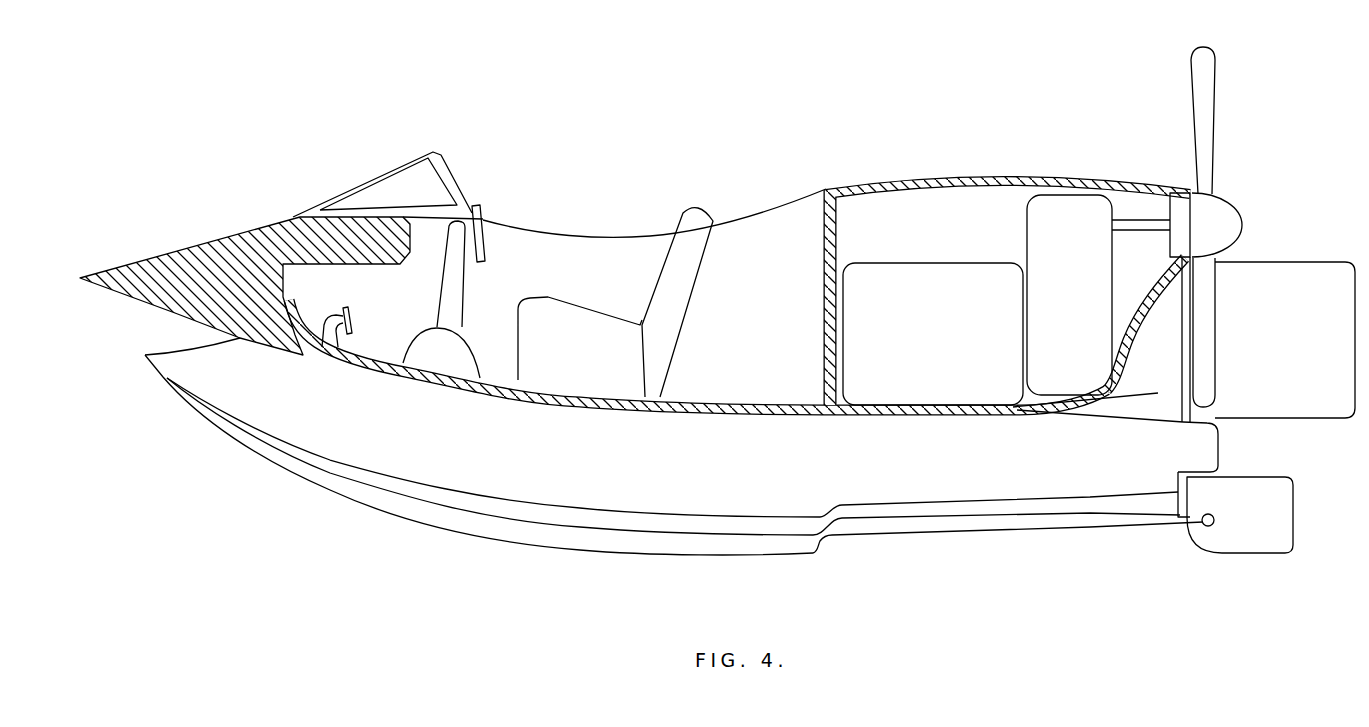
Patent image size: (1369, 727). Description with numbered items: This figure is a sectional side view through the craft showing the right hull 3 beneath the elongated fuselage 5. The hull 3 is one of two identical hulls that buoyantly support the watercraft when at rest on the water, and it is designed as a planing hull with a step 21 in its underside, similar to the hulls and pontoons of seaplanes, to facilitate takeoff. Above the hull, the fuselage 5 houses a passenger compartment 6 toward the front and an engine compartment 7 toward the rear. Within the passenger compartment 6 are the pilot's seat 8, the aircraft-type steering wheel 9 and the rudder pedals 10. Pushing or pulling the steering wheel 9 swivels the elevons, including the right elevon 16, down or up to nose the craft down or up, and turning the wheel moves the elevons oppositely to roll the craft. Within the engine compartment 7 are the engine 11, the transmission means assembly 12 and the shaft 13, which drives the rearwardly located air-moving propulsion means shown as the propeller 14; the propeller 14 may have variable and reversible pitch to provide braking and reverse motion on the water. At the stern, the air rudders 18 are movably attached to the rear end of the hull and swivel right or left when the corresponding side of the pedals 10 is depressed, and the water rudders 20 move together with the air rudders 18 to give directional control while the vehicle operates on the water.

The right hull 3 is at (600, 481).
The fuselage 5 is at (217, 301).
The passenger compartment 6 is at (507, 301).
The engine compartment 7 is at (932, 232).
The pilot's seat 8 is at (582, 351).
The steering wheel 9 is at (486, 212).
The rudder pedals 10 is at (352, 320).
The engine 11 is at (937, 346).
The transmission means assembly 12 is at (1084, 294).
The shaft 13 is at (1155, 228).
The propeller 14 is at (1213, 155).
The right elevon 16 is at (1127, 388).
The air rudders 18 is at (1292, 262).
The water rudders 20 is at (1292, 477).
The step 21 is at (823, 540).